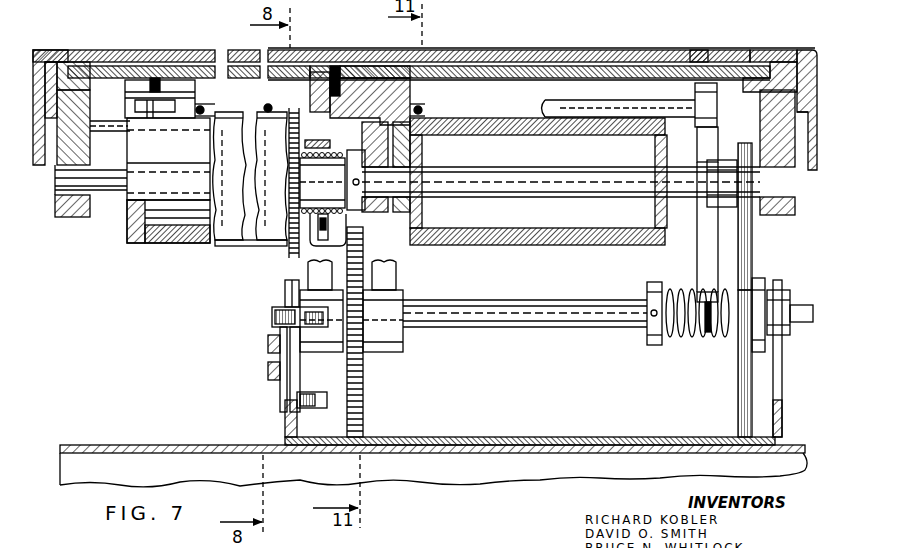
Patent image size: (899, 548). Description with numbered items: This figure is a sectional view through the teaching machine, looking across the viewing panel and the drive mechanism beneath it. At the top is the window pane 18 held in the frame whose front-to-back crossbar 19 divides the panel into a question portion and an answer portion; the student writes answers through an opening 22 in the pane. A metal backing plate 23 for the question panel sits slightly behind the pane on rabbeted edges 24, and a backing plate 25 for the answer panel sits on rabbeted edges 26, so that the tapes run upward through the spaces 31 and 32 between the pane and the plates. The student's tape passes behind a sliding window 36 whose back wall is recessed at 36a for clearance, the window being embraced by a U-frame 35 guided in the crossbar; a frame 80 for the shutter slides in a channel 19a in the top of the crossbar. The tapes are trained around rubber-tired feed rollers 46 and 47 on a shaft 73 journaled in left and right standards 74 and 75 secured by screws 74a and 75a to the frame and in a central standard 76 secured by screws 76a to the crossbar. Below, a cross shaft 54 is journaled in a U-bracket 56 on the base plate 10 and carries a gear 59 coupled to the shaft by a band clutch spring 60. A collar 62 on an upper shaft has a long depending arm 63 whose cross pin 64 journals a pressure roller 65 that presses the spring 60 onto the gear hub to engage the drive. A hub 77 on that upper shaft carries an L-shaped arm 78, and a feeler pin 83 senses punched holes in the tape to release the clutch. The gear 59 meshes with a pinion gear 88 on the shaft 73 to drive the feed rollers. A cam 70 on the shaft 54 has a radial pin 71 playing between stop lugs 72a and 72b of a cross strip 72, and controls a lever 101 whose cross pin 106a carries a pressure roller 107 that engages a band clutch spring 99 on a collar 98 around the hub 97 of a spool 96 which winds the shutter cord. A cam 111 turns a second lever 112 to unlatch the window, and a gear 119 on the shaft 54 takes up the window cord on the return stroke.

The base plate 10 is at (182, 445).
The window pane 18 is at (325, 58).
The crossbar 19 is at (365, 72).
The channel 19a is at (355, 66).
The opening 22 is at (682, 70).
The backing plate 23 is at (205, 66).
The rabbeted edges 24 is at (70, 66).
The backing plate 25 is at (545, 80).
The rabbeted edges 26 is at (758, 62).
The space 31 is at (200, 62).
The space 32 is at (706, 70).
The U-frame 35 is at (390, 86).
The window 36 is at (585, 62).
The recess 36a is at (468, 78).
The feed roller 46 is at (180, 232).
The feed roller 47 is at (528, 246).
The cross shaft 54 is at (516, 328).
The U-bracket 56 is at (782, 410).
The gear 59 is at (738, 383).
The band clutch spring 60 is at (668, 342).
The collar 62 is at (697, 158).
The arm 63 is at (706, 232).
The cross pin 64 is at (688, 300).
The pressure roller 65 is at (705, 336).
The cam 70 is at (333, 340).
The pin 71 is at (332, 433).
The cross strip 72 is at (272, 350).
The stop lug 72a is at (278, 318).
The stop lug 72b is at (286, 418).
The shaft 73 is at (596, 180).
The standard 74 is at (85, 150).
The screws 74a is at (66, 130).
The standard 75 is at (780, 210).
The screws 75a is at (765, 136).
The standard 76 is at (383, 208).
The screws 76a is at (388, 130).
The hub 77 is at (284, 107).
The arm 78 is at (322, 80).
The frame 80 is at (297, 66).
The feeler pin 83 is at (157, 90).
The pinion gear 88 is at (752, 222).
The spool 96 is at (305, 160).
The hub 97 is at (327, 195).
The collar 98 is at (338, 168).
The band clutch spring 99 is at (340, 222).
The lever 101 is at (218, 157).
The cross pin 106a is at (302, 252).
The pressure roller 107 is at (270, 246).
The cam 111 is at (390, 346).
The lever 112 is at (382, 297).
The gear 119 is at (364, 410).